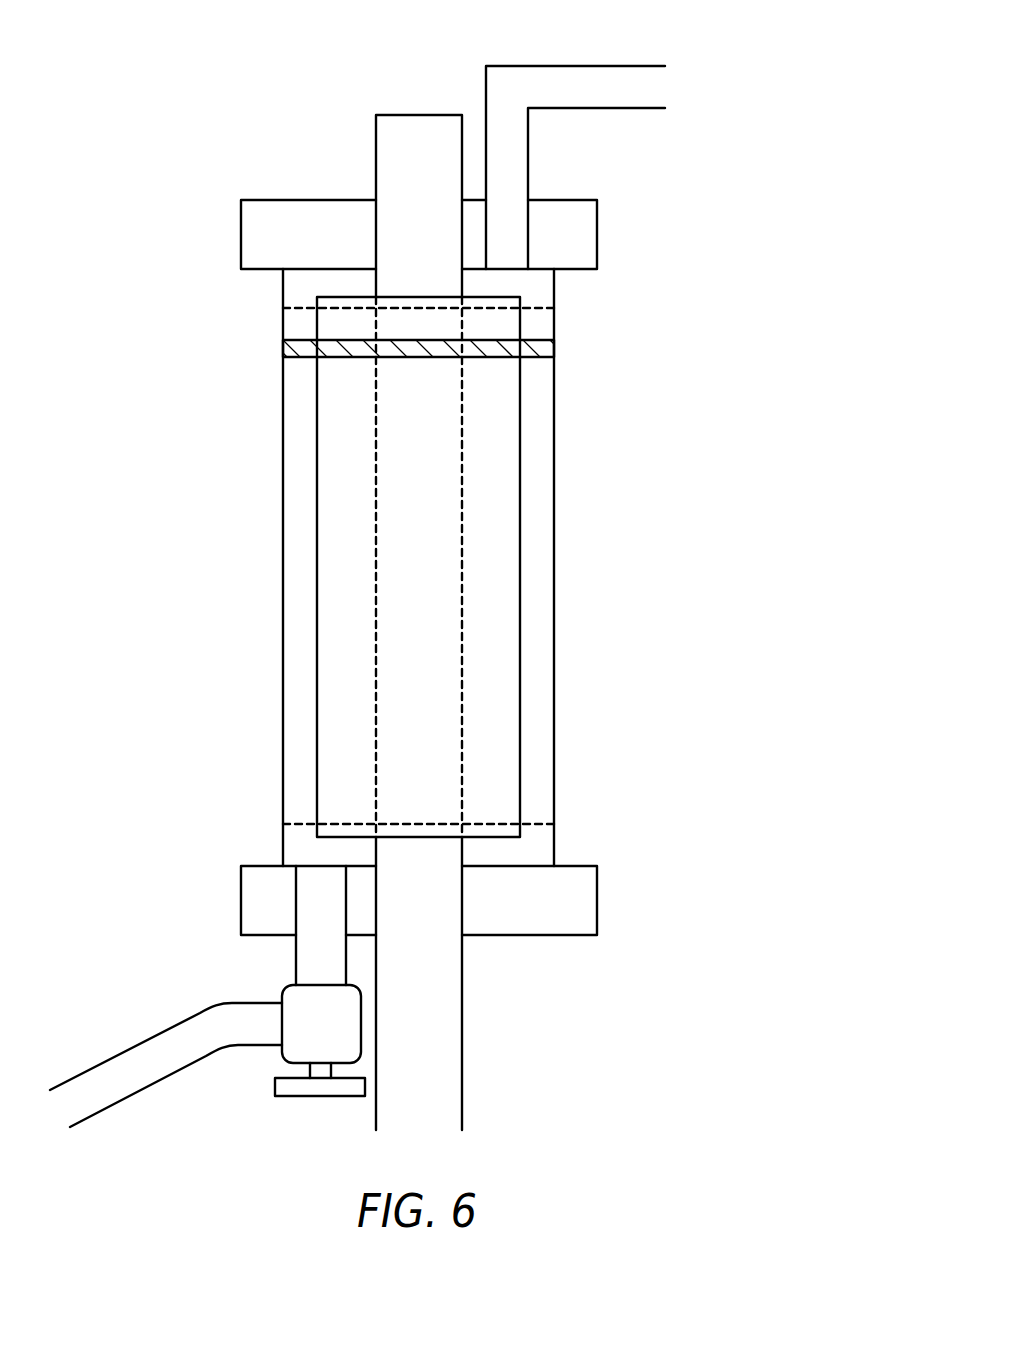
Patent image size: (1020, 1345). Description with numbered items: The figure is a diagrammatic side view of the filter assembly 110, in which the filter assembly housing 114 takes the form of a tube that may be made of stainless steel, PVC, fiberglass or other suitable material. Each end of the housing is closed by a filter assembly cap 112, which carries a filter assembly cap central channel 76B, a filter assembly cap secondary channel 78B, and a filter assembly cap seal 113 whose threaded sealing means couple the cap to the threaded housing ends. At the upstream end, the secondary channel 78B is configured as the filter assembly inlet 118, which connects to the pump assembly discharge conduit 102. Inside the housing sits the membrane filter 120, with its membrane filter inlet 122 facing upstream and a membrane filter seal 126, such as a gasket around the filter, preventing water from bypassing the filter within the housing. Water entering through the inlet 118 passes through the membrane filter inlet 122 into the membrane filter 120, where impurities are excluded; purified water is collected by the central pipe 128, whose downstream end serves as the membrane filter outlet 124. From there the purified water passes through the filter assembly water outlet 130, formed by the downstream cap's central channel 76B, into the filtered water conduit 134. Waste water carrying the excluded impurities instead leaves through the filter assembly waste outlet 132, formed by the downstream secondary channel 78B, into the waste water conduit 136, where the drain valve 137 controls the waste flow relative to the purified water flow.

The pump assembly discharge conduit 102 is at (602, 66).
The filter assembly cap central channel 76B is at (375, 228).
The filter assembly inlet 118 is at (513, 197).
The filter assembly cap 112 is at (597, 228).
The filter assembly cap secondary channel 78B is at (528, 240).
The filter assembly cap seal 113 is at (283, 308).
The membrane filter inlet 122 is at (492, 298).
The membrane filter seal 126 is at (283, 350).
The filter assembly housing 114 is at (554, 453).
The filter assembly 110 is at (680, 512).
The central pipe 128 is at (398, 592).
The membrane filter 120 is at (520, 700).
The membrane filter outlet 124 is at (443, 853).
The filter assembly waste outlet 132 is at (317, 920).
The filter assembly water outlet 130 is at (418, 917).
The filtered water conduit 134 is at (443, 1057).
The waste water conduit 136 is at (142, 1090).
The drain valve 137 is at (332, 1097).